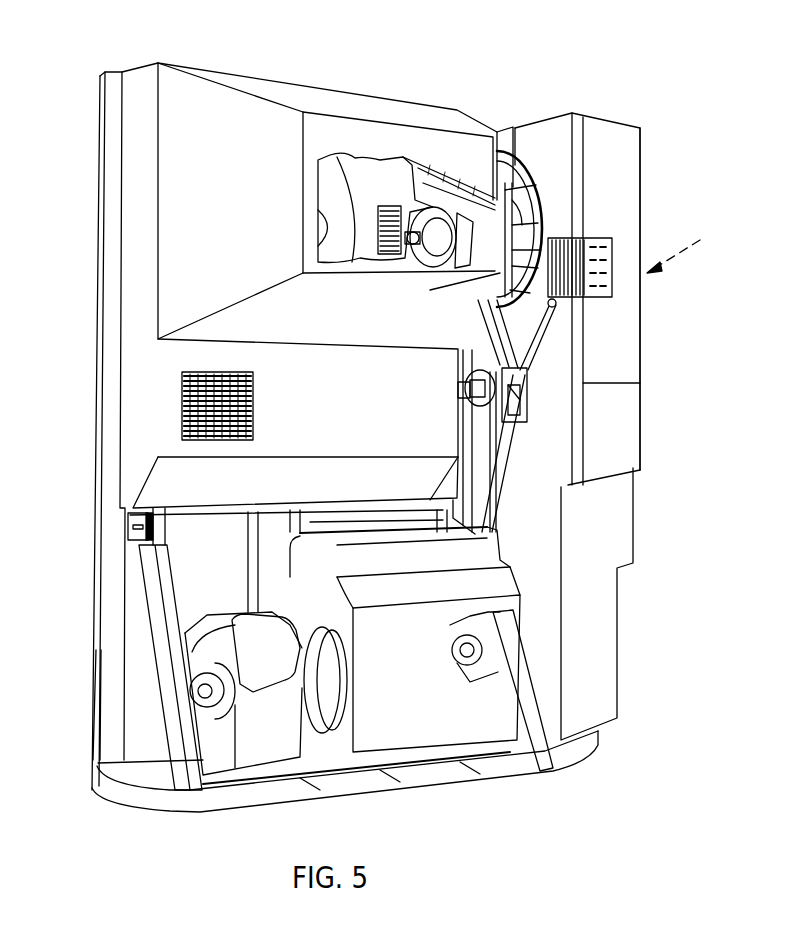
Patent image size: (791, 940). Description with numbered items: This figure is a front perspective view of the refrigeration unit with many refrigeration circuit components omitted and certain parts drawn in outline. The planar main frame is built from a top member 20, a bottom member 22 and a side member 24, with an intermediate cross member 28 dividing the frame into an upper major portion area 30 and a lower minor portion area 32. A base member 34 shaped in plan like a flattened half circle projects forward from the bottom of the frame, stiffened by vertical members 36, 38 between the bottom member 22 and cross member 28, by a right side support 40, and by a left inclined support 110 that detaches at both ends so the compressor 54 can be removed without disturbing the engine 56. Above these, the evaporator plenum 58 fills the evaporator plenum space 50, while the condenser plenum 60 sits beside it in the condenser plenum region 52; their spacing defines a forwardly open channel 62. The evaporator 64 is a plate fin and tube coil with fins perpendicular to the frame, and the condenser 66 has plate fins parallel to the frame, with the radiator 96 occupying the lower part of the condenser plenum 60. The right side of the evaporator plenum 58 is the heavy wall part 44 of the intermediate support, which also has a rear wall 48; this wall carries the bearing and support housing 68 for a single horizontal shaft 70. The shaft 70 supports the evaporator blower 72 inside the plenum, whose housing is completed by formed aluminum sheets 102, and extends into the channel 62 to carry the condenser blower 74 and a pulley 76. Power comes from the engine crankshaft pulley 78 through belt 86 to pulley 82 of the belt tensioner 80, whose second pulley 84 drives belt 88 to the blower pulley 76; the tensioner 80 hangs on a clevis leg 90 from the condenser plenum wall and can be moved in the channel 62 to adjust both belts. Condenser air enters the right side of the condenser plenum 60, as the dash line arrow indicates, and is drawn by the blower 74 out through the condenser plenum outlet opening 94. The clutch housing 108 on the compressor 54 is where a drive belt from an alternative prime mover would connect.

The top member 20 is at (115, 78).
The bottom member 22 is at (143, 762).
The side member 24 is at (112, 620).
The intermediate cross member 28 is at (205, 510).
The upper major portion area 30 is at (88, 337).
The lower minor portion area 32 is at (88, 660).
The base member 34 is at (293, 800).
The vertical member 36 is at (270, 558).
The vertical member 38 is at (447, 523).
The right side support 40 is at (520, 663).
The wall part 44 is at (428, 182).
The rear wall 48 is at (504, 128).
The evaporator plenum space 50 is at (347, 72).
The side housing 52 is at (579, 106).
The compressor 54 is at (258, 731).
The engine 56 is at (413, 708).
The evaporator plenum 58 is at (210, 188).
The condenser plenum 60 is at (637, 150).
The channel 62 is at (540, 128).
The evaporator 64 is at (257, 405).
The condenser 66 is at (557, 237).
The bearing and support housing 68 is at (433, 252).
The shaft 70 is at (410, 247).
The evaporator blower 72 is at (392, 206).
The condenser blower 74 is at (525, 212).
The pulley 76 is at (467, 240).
The pulley 78 is at (452, 663).
The belt tensioner 80 is at (530, 383).
The pulley 82 is at (515, 368).
The pulley 84 is at (480, 406).
The belt 86 is at (512, 470).
The belt 88 is at (462, 366).
The leg 90 is at (528, 338).
The condenser plenum outlet opening 94 is at (522, 205).
The radiator 96 is at (632, 433).
The formed aluminum sheets 102 is at (343, 195).
The clutch housing 108 is at (321, 663).
The left inclined support 110 is at (170, 602).